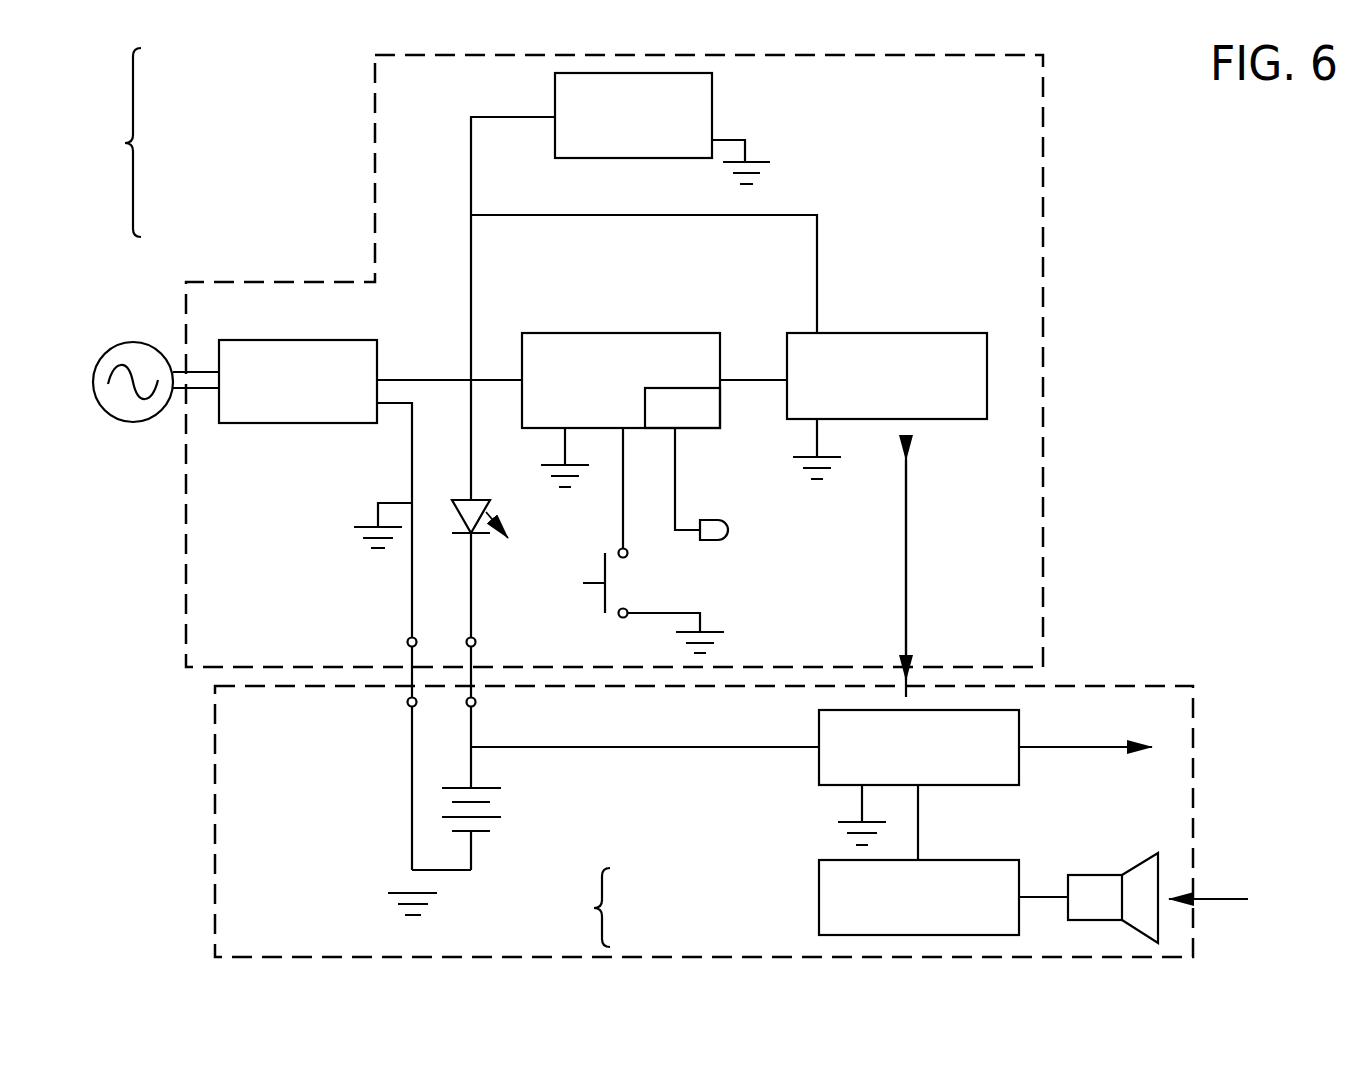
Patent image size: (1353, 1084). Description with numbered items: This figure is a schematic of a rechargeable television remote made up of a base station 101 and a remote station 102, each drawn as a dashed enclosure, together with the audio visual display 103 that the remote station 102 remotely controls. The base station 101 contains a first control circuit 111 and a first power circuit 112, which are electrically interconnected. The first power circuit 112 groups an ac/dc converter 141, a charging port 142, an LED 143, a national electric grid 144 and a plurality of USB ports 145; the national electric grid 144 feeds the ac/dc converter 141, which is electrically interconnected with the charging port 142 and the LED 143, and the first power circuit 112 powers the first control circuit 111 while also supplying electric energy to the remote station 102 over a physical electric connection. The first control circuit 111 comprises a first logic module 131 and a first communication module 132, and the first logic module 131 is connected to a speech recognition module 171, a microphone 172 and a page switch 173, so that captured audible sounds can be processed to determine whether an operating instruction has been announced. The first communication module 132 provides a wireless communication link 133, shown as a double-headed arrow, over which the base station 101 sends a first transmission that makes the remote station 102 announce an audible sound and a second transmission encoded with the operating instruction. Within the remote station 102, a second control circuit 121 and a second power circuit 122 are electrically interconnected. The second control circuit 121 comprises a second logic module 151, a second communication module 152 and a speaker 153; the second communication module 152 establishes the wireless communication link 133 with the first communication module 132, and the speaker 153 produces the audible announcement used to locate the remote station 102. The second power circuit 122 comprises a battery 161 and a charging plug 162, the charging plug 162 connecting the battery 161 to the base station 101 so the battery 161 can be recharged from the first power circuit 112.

The base station 101 is at (1074, 290).
The remote station 102 is at (1206, 659).
The audio visual display 103 is at (1293, 722).
The first control circuit 111 is at (837, 278).
The first power circuit 112 is at (132, 142).
The second control circuit 121 is at (1238, 899).
The second power circuit 122 is at (598, 907).
The first logic module 131 is at (683, 333).
The first communication module 132 is at (950, 337).
The wireless communication link 133 is at (906, 568).
The ac/dc converter 141 is at (363, 340).
The charging port 142 is at (476, 642).
The LED 143 is at (497, 510).
The national electric grid 144 is at (117, 345).
The plurality of USB ports 145 is at (712, 88).
The second logic module 151 is at (993, 870).
The second communication module 152 is at (1019, 765).
The speaker 153 is at (1095, 873).
The battery 161 is at (501, 805).
The charging plug 162 is at (476, 702).
The speech recognition module 171 is at (690, 428).
The microphone 172 is at (730, 537).
The page switch 173 is at (627, 583).